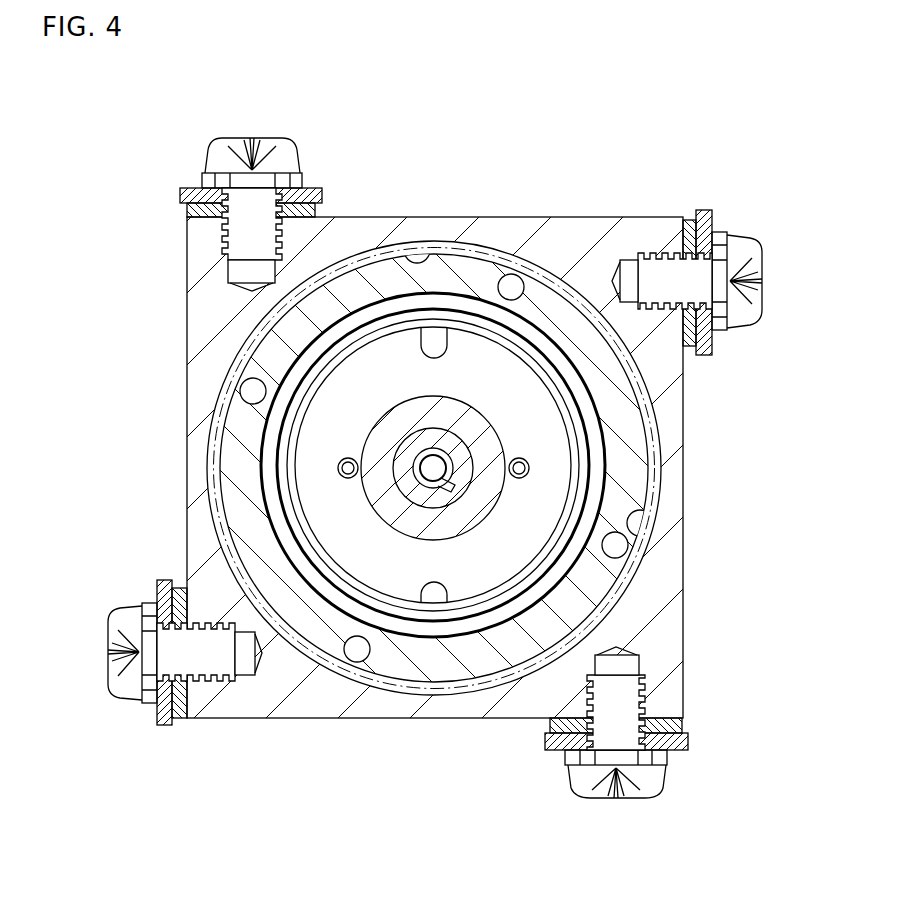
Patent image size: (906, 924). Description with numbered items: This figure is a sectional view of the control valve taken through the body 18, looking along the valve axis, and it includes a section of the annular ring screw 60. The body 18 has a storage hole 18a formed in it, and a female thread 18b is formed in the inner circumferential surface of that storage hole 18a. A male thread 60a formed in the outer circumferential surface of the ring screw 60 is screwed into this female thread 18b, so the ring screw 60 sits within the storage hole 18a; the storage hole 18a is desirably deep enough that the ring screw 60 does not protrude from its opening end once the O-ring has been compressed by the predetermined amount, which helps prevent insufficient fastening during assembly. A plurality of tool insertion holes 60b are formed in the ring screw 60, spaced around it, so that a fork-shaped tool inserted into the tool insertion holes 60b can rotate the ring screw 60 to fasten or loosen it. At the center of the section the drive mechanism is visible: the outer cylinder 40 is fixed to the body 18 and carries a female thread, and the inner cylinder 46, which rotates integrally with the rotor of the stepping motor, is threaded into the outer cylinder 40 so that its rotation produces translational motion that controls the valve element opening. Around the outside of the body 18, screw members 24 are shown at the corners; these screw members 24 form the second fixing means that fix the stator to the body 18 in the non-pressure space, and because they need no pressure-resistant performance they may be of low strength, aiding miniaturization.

The body 18 is at (583, 230).
The storage hole 18a is at (418, 250).
The female thread 18b is at (612, 520).
The screw member 24 is at (286, 152).
The outer cylinder 40 is at (375, 488).
The inner cylinder 46 is at (448, 494).
The ring screw 60 is at (640, 487).
The male thread 60a is at (652, 432).
The tool insertion holes 60b is at (511, 285).